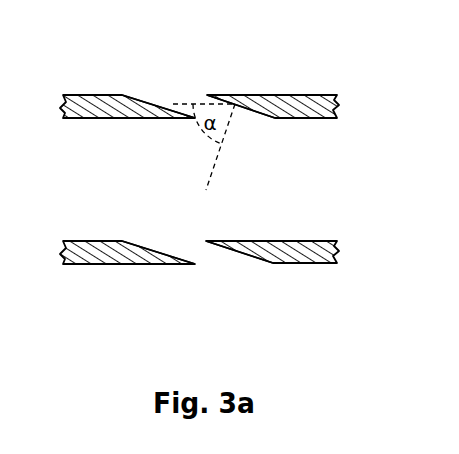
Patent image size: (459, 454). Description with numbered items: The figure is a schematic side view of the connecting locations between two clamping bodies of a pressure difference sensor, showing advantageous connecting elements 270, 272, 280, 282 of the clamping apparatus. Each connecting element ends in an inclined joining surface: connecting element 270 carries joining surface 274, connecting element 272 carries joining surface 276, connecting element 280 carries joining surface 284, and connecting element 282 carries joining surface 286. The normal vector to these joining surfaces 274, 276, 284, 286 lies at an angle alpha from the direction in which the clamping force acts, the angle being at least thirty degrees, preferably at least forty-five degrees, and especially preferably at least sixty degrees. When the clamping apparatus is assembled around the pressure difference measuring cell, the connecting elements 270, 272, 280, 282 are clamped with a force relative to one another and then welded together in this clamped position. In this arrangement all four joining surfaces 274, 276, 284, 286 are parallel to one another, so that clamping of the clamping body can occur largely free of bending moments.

The connecting element 270 is at (103, 98).
The joining surface 274 is at (142, 102).
The connecting element 272 is at (290, 96).
The joining surface 276 is at (252, 112).
The connecting element 280 is at (103, 244).
The joining surface 284 is at (142, 249).
The connecting element 282 is at (288, 249).
The joining surface 286 is at (262, 262).